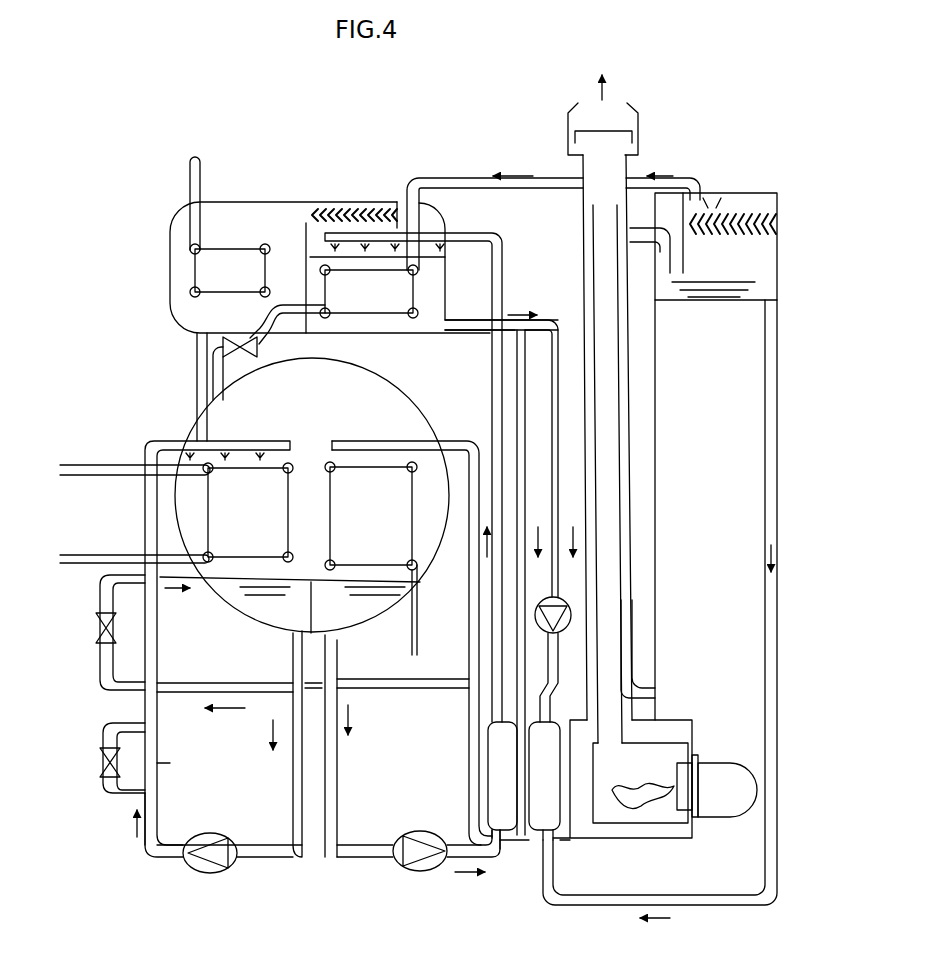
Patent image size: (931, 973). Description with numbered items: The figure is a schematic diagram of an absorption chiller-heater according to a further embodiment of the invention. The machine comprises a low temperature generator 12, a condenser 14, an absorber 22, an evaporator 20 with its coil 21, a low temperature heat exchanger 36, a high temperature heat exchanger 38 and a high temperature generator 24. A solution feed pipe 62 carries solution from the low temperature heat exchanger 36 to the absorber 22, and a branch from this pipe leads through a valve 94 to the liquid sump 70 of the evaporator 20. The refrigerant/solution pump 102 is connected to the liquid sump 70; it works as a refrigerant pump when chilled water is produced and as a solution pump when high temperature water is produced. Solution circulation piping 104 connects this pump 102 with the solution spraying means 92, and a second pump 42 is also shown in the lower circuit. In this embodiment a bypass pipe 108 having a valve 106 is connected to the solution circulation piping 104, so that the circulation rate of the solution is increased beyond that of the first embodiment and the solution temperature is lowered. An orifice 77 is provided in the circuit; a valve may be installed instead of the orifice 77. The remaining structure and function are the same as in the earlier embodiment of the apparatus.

The low temperature generator 12 is at (367, 280).
The condenser 14 is at (228, 260).
The evaporator 20 is at (248, 540).
The coil in drum 21 is at (293, 466).
The absorber 22 is at (372, 540).
The high temperature generator 24 is at (676, 720).
The low temperature heat exchanger 36 is at (505, 760).
The high temperature heat exchanger 38 is at (537, 835).
The pump 42 is at (428, 870).
The solution feed pipe 62 is at (470, 628).
The liquid sump 70 is at (263, 612).
The orifice 77 is at (168, 764).
The solution spraying means 92 is at (233, 441).
The valve 94 is at (96, 626).
The refrigerant/solution pump 102 is at (232, 870).
The solution circulation piping 104 is at (143, 703).
The valve 106 is at (100, 770).
The bypass pipe 108 is at (120, 800).